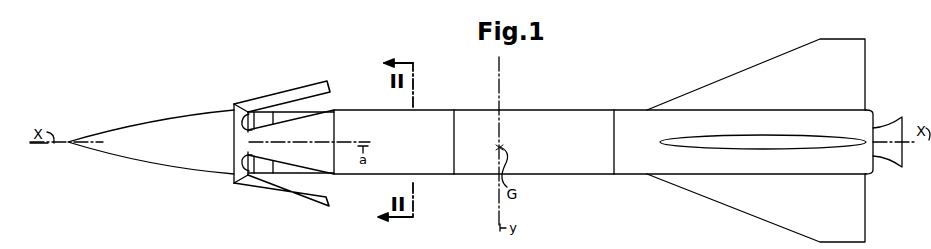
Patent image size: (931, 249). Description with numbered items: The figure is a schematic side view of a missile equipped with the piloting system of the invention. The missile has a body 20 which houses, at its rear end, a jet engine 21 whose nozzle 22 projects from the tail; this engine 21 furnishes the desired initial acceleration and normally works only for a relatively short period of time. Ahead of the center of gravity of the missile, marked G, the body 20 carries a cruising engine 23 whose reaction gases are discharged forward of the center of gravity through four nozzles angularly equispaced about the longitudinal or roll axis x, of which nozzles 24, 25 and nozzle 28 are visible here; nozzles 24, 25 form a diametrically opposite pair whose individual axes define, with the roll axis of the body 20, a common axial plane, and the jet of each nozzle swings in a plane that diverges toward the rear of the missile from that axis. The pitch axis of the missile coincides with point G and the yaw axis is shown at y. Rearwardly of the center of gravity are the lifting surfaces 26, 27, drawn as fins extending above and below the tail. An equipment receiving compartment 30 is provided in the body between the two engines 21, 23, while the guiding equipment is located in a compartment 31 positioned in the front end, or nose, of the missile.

The body 20 is at (528, 108).
The jet engine 21 is at (637, 118).
The nozzle 22 is at (891, 127).
The cruising engine 23 is at (428, 123).
The nozzle 24 is at (309, 89).
The nozzle 25 is at (327, 201).
The lifting surface 26 is at (778, 68).
The lifting surface 27 is at (768, 202).
The nozzle 28 is at (323, 130).
The equipment receiving compartment 30 is at (571, 120).
The compartment 31 is at (192, 158).